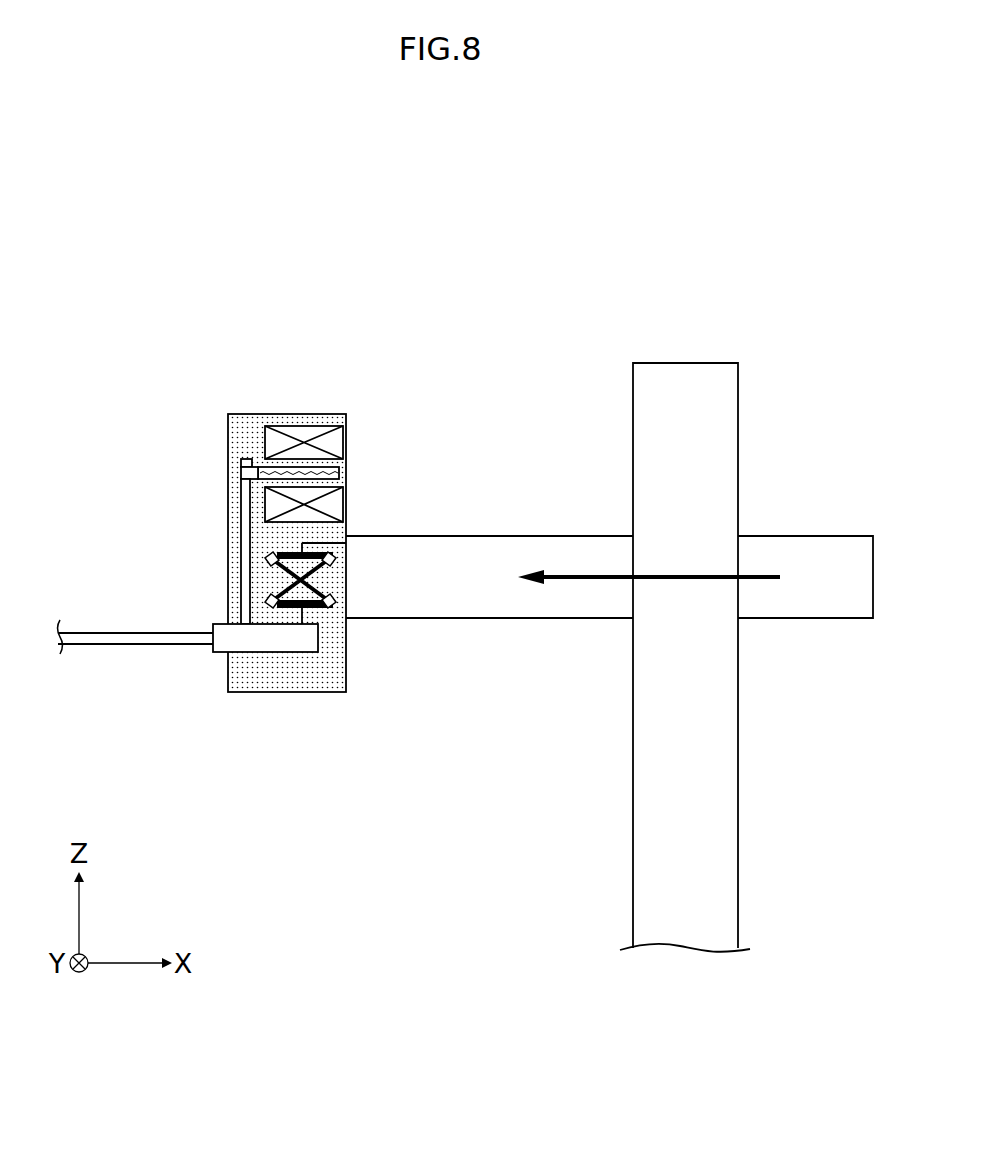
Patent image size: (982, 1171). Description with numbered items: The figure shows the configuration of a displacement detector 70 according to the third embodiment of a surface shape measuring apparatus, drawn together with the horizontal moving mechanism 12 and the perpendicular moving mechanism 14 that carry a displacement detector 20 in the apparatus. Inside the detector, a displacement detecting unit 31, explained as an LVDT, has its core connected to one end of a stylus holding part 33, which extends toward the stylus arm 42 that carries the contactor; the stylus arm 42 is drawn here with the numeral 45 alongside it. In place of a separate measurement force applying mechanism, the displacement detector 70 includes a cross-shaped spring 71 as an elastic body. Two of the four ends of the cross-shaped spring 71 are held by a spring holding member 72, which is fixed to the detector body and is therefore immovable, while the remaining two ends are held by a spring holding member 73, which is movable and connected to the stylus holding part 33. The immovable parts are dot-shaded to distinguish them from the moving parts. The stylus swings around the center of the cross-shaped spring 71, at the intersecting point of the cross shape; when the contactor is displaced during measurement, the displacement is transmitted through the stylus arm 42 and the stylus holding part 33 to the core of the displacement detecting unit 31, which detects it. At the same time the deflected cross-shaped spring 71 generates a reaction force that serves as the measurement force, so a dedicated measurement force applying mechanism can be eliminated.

The horizontal moving mechanism 12 is at (807, 545).
The perpendicular moving mechanism 14 is at (688, 369).
The displacement detector 20 is at (327, 413).
The displacement detecting unit 31 is at (256, 437).
The stylus holding part 33 is at (244, 538).
The stylus arm 42 is at (82, 638).
The rod 45 is at (136, 617).
The displacement detector 70 is at (262, 439).
The cross-shaped spring 71 is at (281, 588).
The spring holding member 72 is at (345, 627).
The spring holding member 73 is at (313, 604).